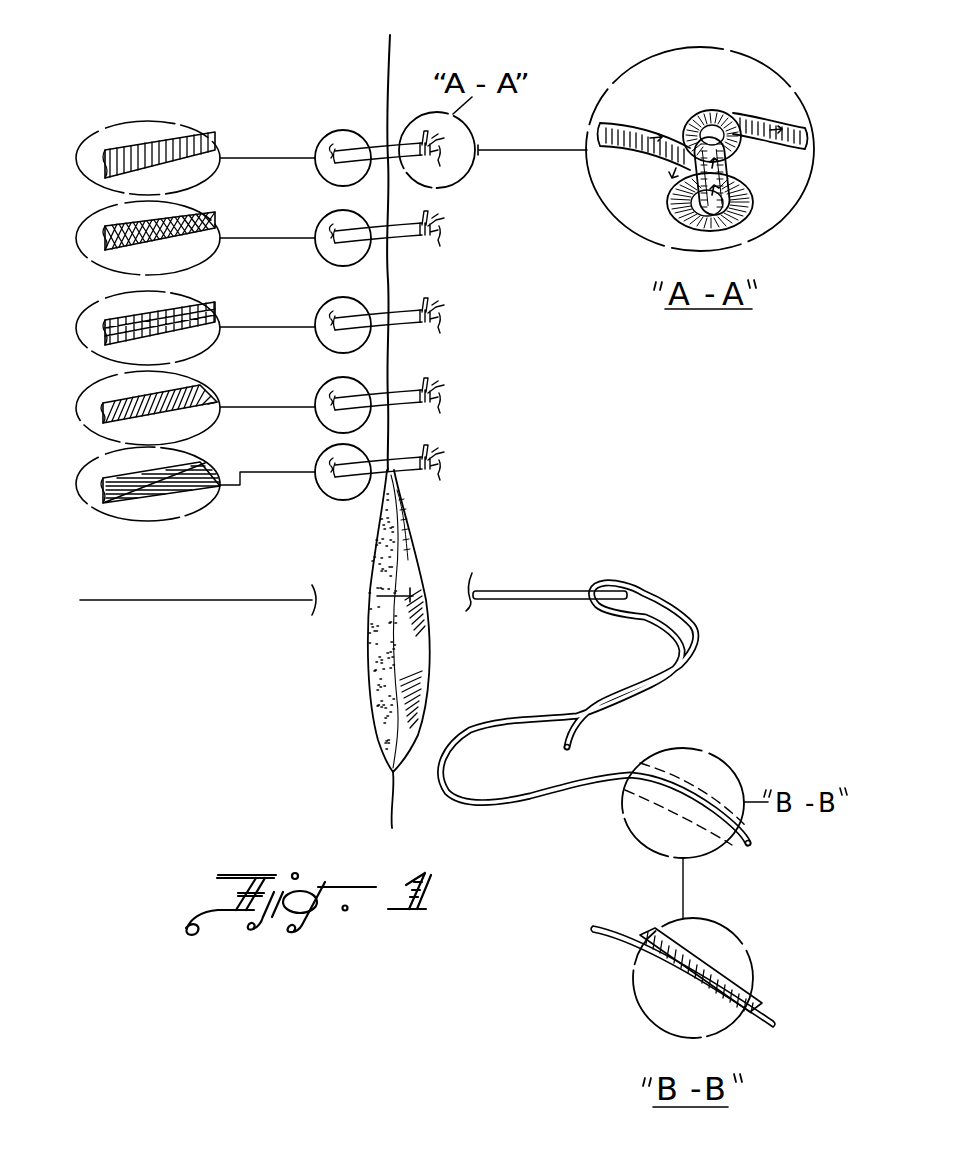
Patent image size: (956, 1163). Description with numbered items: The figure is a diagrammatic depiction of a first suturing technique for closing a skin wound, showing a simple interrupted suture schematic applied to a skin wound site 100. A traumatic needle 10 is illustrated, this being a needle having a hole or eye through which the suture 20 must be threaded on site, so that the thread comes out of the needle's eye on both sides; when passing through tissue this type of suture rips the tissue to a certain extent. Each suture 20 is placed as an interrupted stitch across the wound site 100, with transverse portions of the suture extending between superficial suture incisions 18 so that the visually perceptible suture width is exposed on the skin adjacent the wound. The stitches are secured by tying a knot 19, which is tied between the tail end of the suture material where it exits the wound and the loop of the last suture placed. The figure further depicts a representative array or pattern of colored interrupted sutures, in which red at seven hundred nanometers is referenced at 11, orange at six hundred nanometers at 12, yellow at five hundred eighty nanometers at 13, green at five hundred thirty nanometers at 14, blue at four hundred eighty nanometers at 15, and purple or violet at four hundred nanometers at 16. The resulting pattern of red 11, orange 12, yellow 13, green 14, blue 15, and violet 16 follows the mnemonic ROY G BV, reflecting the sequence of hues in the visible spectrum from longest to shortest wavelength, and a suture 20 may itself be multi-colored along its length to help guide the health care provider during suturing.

The traumatic needle 10 is at (522, 590).
The red suture color 11 is at (120, 150).
The orange suture color 12 is at (110, 230).
The yellow suture color 13 is at (110, 322).
The green suture color 14 is at (110, 405).
The blue suture color 15 is at (110, 483).
The violet suture color 16 is at (713, 957).
The superficial suture incision 18 is at (312, 586).
The knot 19 is at (670, 82).
The suture 20 is at (366, 146).
The skin wound site 100 is at (322, 694).